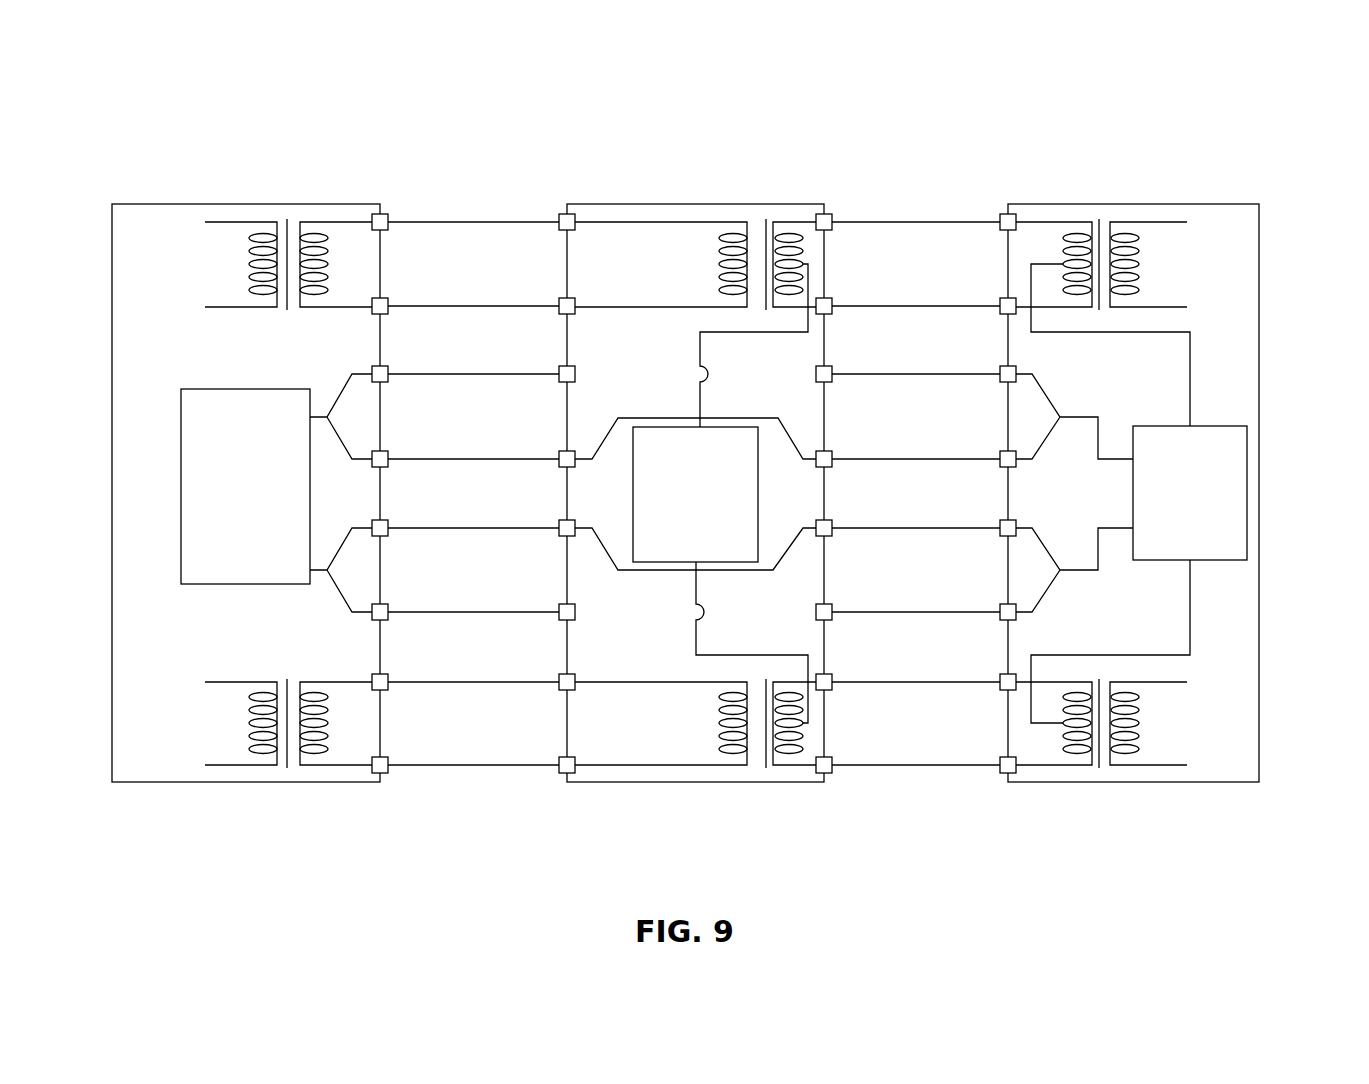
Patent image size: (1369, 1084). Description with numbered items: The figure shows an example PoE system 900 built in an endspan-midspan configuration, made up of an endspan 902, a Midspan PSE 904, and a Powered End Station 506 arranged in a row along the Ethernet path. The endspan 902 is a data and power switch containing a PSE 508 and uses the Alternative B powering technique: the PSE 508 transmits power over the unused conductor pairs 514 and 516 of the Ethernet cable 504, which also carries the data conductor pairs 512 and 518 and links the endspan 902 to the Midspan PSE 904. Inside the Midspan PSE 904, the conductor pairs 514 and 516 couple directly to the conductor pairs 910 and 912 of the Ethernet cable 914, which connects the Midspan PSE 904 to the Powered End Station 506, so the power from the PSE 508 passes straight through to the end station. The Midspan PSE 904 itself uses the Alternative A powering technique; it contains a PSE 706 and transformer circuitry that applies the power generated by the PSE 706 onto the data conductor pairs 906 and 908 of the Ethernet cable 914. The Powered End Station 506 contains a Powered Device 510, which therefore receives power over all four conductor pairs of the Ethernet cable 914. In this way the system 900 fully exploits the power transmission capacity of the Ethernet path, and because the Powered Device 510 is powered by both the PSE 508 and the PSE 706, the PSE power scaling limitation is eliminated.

The PoE system 900 is at (1276, 120).
The endspan 902 is at (257, 783).
The Midspan PSE 904 is at (687, 783).
The Powered End Station 506 is at (1133, 783).
The PSE 508 is at (181, 474).
The PSE 706 is at (633, 515).
The Powered Device 510 is at (1247, 505).
The Ethernet cable 504 is at (458, 113).
The Ethernet cable 914 is at (920, 113).
The conductor pair 512 is at (464, 211).
The conductor pair 514 is at (464, 366).
The conductor pair 516 is at (464, 519).
The conductor pair 518 is at (464, 670).
The data conductor pair 906 is at (900, 208).
The conductor pair 910 is at (908, 368).
The conductor pair 912 is at (908, 520).
The data conductor pair 908 is at (893, 766).